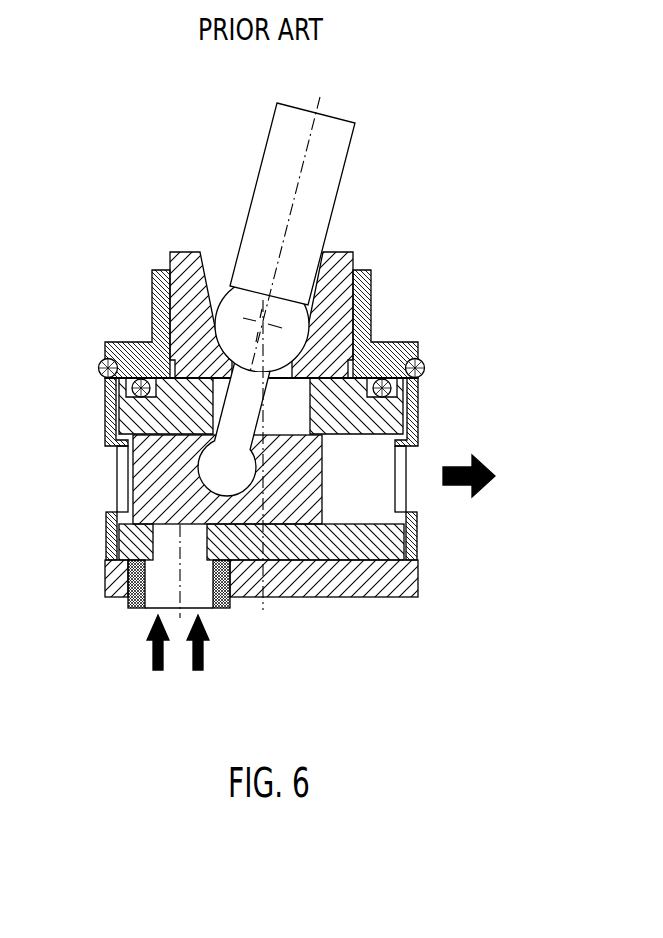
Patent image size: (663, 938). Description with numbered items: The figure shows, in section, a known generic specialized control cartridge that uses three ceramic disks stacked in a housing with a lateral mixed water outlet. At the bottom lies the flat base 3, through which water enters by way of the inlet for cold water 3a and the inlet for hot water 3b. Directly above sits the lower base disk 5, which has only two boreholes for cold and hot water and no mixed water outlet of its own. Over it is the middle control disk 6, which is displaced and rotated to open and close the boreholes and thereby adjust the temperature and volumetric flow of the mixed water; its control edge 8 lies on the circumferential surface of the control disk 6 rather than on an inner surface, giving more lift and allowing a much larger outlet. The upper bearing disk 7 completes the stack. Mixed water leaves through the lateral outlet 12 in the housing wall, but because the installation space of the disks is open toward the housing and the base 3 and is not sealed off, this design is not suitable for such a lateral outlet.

The base 3 is at (112, 587).
The inlet for cold water 3a is at (160, 655).
The inlet for hot water 3b is at (205, 660).
The base disk 5 is at (118, 537).
The control disk 6 is at (140, 465).
The bearing disk 7 is at (402, 412).
The control edge 8 is at (130, 512).
The lateral outlet 12 is at (402, 467).